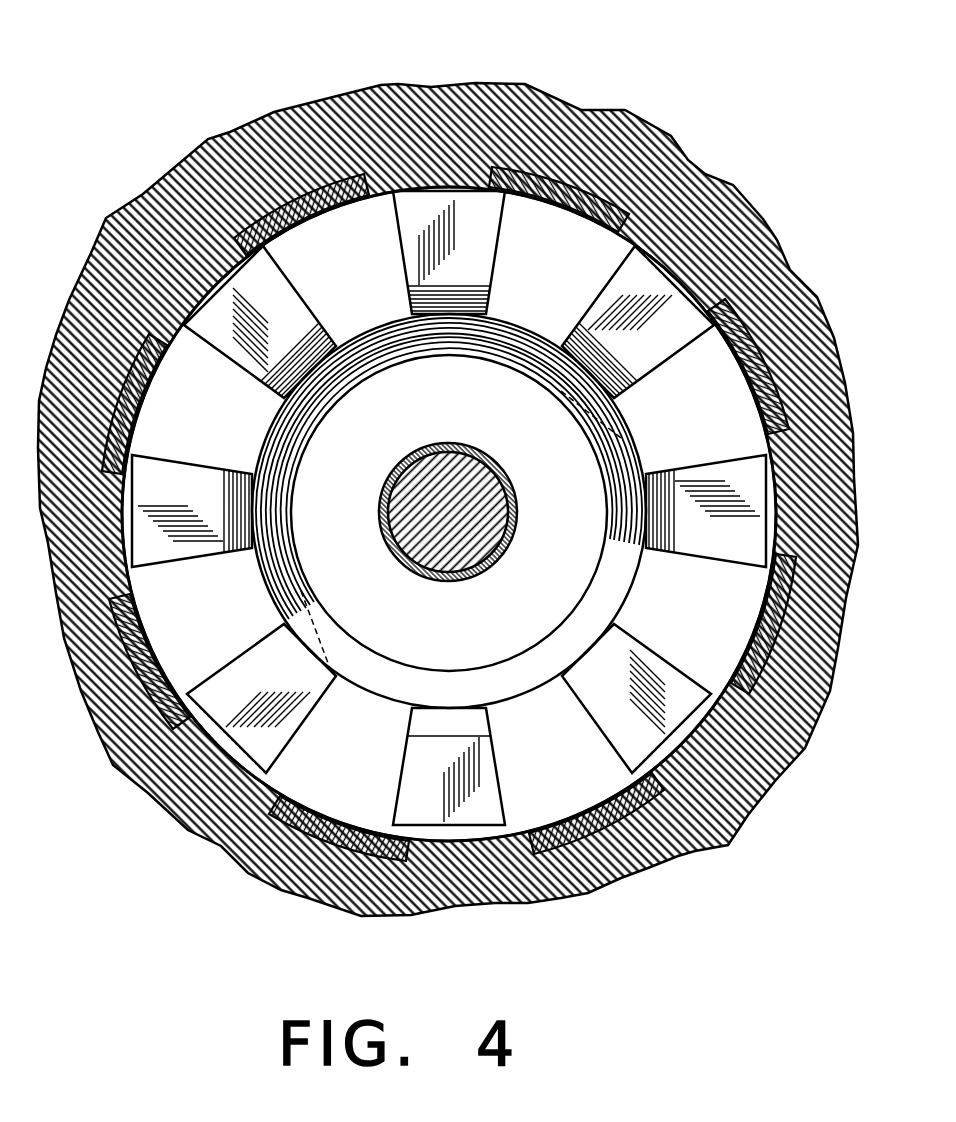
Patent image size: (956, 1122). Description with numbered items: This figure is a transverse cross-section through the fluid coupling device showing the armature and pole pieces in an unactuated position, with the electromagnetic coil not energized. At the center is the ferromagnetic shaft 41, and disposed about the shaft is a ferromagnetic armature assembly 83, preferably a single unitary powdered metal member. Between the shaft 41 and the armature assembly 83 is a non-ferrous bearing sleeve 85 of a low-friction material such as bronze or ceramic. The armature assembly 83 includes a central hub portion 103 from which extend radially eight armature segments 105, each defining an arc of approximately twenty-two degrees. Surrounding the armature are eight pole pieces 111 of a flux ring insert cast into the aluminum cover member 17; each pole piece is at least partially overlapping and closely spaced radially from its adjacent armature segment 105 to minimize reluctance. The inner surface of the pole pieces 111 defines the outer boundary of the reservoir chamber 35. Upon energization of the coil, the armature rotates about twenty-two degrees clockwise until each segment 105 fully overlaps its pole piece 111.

The cover member 17 is at (410, 100).
The reservoir chamber 35 is at (449, 514).
The shaft 41 is at (470, 493).
The armature assembly 83 is at (366, 307).
The bearing sleeve 85 is at (443, 437).
The central hub portion 103 is at (493, 627).
The armature segments 105 is at (182, 477).
The pole pieces 111 is at (264, 206).